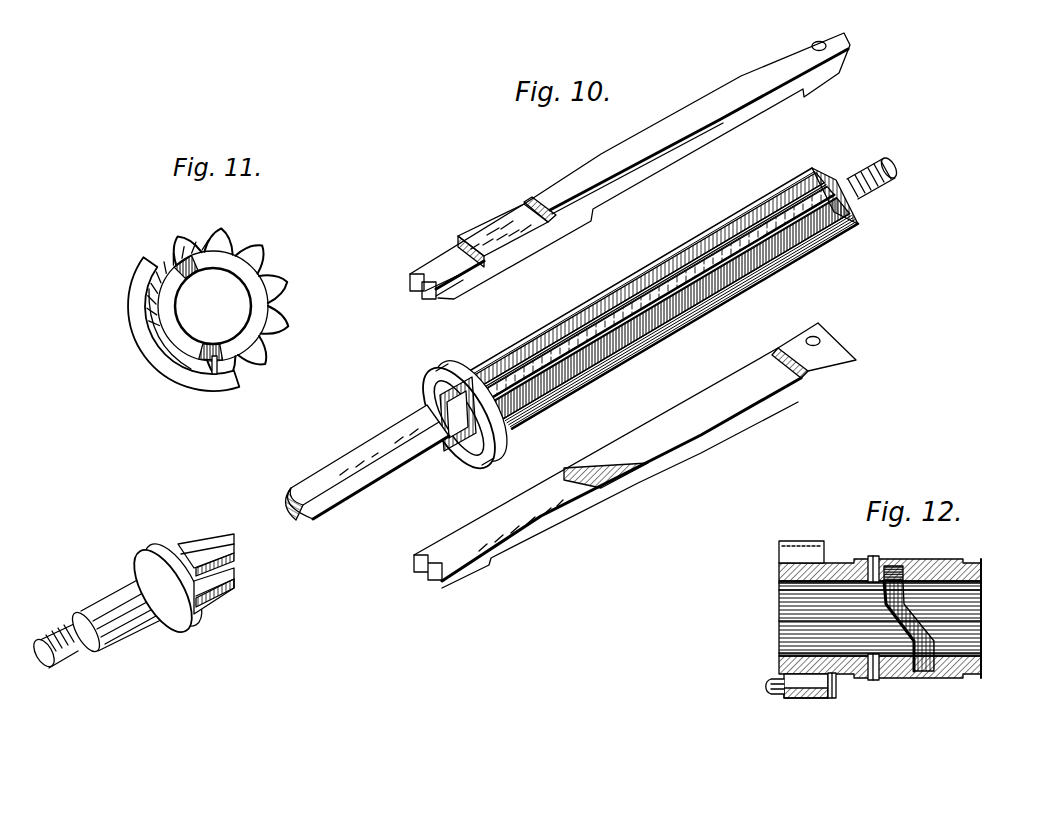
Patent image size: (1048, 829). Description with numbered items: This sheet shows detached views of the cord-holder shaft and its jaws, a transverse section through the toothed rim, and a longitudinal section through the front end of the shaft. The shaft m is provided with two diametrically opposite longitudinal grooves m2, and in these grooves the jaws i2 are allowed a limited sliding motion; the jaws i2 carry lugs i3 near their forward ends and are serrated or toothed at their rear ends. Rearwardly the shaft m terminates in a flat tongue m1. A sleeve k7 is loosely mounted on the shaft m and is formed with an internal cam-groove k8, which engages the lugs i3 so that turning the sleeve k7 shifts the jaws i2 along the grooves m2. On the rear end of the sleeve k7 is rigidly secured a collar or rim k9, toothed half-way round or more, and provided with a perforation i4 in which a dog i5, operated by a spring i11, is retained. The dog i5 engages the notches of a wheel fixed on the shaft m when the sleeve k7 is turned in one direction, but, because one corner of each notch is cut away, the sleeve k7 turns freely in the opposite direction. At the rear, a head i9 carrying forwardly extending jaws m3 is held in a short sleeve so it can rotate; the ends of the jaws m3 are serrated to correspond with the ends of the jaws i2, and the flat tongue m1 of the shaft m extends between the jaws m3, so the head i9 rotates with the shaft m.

In FIG. 10, the jaws i2 is at (645, 140).
In FIG. 10, the lugs i3 is at (812, 44).
In FIG. 10, the shaft m is at (643, 273).
In FIG. 10, the flat tongue m1 is at (593, 337).
In FIG. 10, the longitudinal grooves m2 is at (545, 345).
In FIG. 10, the jaws m3 is at (189, 530).
In FIG. 10, the head i9 is at (122, 602).
In FIG. 11, the sleeve k7 is at (262, 271).
In FIG. 12, the sleeve k7 is at (984, 620).
In FIG. 12, the internal cam-groove k8 is at (902, 615).
In FIG. 11, the rim k9 is at (170, 368).
In FIG. 12, the rim k9 is at (778, 567).
In FIG. 11, the spring i11 is at (142, 312).
In FIG. 12, the spring i11 is at (835, 690).
In FIG. 12, the perforation i4 is at (803, 698).
In FIG. 12, the dog i5 is at (764, 686).